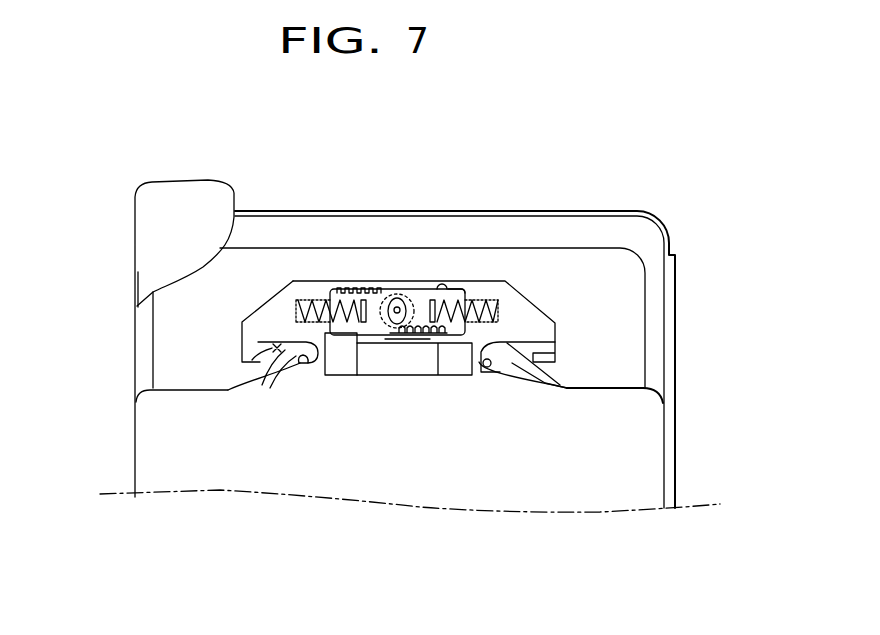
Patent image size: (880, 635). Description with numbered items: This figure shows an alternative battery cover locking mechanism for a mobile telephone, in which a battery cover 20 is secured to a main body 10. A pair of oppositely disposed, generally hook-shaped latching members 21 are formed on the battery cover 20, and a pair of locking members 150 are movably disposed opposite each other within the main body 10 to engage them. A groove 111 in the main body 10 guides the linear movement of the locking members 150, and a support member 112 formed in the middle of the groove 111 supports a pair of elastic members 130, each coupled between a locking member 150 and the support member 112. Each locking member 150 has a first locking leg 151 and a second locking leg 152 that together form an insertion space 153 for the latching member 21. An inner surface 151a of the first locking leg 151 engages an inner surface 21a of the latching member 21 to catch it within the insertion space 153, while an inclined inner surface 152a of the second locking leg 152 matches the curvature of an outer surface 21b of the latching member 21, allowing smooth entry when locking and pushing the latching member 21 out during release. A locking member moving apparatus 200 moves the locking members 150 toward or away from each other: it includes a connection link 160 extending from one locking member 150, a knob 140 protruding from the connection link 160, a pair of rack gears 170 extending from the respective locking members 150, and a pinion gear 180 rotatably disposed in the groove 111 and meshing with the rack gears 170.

The main body 10 is at (130, 225).
The battery cover 20 is at (633, 443).
The latching member 21 is at (282, 357).
The inner surface of latching member 21a is at (512, 347).
The outer surface of latching member 21b is at (546, 365).
The groove 111 is at (452, 284).
The support member 112 is at (364, 299).
The elastic member 130 is at (317, 303).
The knob 140 is at (405, 296).
The locking member 150 is at (272, 327).
The first locking leg 151 is at (306, 366).
The inner surface of first locking leg 151a is at (295, 363).
The second locking leg 152 is at (258, 341).
The inner surface of second locking leg 152a is at (262, 360).
The insertion space 153 is at (283, 348).
The connection link 160 is at (357, 375).
The rack gear 170 is at (381, 289).
The pinion gear 180 is at (436, 284).
The locking member moving apparatus 200 is at (485, 125).